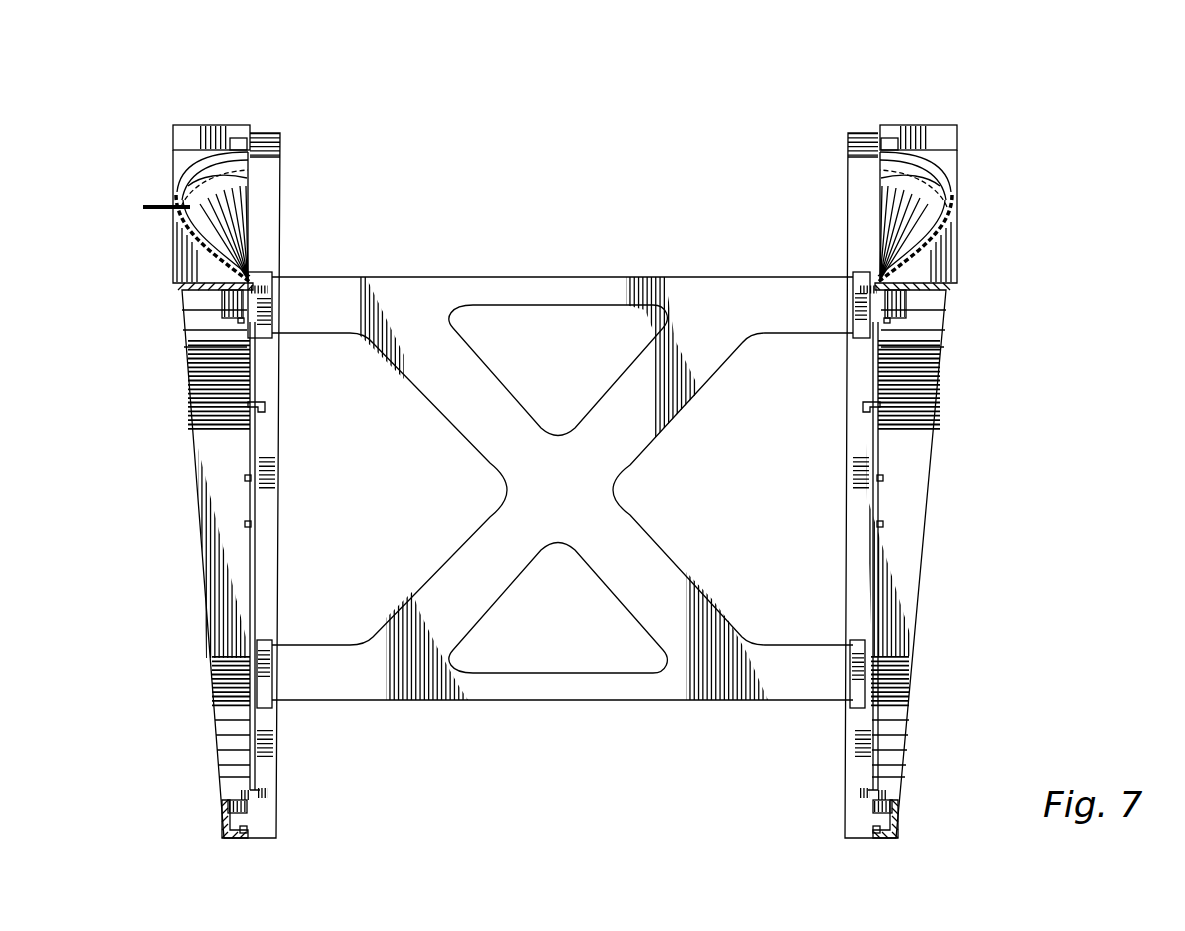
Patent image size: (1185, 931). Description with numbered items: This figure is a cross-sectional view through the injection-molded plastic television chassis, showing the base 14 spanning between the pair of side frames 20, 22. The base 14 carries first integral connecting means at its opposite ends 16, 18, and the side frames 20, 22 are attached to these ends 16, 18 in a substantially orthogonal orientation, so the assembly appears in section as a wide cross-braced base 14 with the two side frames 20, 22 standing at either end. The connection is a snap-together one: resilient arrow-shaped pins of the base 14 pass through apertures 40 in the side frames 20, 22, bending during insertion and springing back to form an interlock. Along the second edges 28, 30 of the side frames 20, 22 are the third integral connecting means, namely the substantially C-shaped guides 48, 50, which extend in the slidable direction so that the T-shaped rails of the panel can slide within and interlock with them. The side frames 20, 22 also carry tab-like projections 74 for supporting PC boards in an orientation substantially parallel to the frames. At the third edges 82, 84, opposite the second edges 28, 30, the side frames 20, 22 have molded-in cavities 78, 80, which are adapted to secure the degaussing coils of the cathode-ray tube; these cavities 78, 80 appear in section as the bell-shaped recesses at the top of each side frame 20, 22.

The base 14 is at (452, 556).
The opposite end of base 16 is at (313, 335).
The opposite end of base 18 is at (813, 335).
The side frame 20 is at (190, 380).
The side frame 22 is at (938, 368).
The second edge of side frame 28 is at (232, 842).
The second edge of side frame 30 is at (887, 846).
The aperture 40 is at (273, 310).
The C-shaped guide 48 is at (228, 820).
The C-shaped guide 50 is at (877, 818).
The tab-like projection 74 is at (260, 292).
The molded-in cavity 78 is at (177, 170).
The molded-in cavity 80 is at (956, 182).
The third edge of side frame 82 is at (197, 126).
The third edge of side frame 84 is at (937, 125).